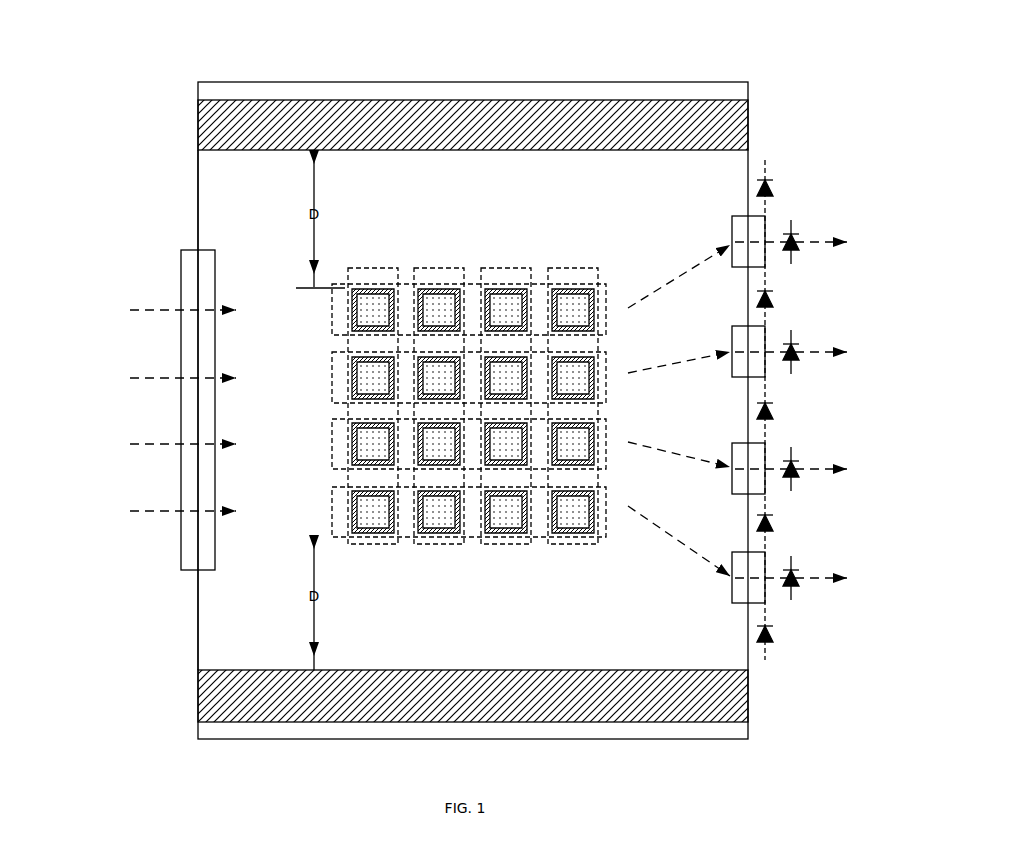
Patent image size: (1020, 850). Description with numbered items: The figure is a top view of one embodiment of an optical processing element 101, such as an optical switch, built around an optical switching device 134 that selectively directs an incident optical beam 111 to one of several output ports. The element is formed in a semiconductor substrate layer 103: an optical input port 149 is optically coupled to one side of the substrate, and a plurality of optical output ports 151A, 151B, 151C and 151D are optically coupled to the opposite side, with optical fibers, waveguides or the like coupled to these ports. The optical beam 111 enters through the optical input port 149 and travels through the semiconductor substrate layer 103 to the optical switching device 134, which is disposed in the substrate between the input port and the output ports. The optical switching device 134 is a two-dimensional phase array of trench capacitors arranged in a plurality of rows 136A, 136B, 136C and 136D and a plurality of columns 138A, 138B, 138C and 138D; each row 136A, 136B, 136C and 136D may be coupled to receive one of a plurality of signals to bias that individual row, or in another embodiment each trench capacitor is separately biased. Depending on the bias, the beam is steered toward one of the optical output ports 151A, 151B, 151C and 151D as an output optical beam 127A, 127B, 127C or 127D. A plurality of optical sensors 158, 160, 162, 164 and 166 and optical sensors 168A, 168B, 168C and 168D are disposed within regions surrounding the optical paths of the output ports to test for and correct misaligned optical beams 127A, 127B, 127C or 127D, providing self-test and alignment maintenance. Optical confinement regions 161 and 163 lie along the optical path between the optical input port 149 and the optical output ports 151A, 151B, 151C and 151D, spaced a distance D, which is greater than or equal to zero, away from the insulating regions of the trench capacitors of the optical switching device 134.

The optical processing element 101 is at (697, 64).
The semiconductor substrate layer 103 is at (198, 604).
The optical beam 111 is at (127, 268).
The optical beam 127A is at (812, 245).
The optical beam 127B is at (812, 355).
The optical beam 127C is at (812, 472).
The optical beam 127D is at (812, 581).
The optical switching device 134 is at (452, 373).
The row of trench capacitors 136A is at (332, 314).
The row of trench capacitors 136B is at (332, 380).
The row of trench capacitors 136C is at (332, 444).
The row of trench capacitors 136D is at (332, 512).
The column of trench capacitors 138A is at (373, 268).
The column of trench capacitors 138B is at (439, 268).
The column of trench capacitors 138C is at (506, 268).
The column of trench capacitors 138D is at (573, 268).
The optical input port 149 is at (190, 250).
The optical output port 151A is at (732, 216).
The optical output port 151B is at (732, 326).
The optical output port 151C is at (732, 443).
The optical output port 151D is at (732, 552).
The optical sensor 158 is at (776, 188).
The optical sensor 160 is at (776, 299).
The optical confinement region 161 is at (198, 130).
The optical sensor 162 is at (776, 411).
The optical confinement region 163 is at (198, 700).
The optical sensor 164 is at (776, 523).
The optical sensor 166 is at (776, 634).
The optical sensor 168A is at (798, 234).
The optical sensor 168B is at (798, 344).
The optical sensor 168C is at (798, 461).
The optical sensor 168D is at (798, 570).